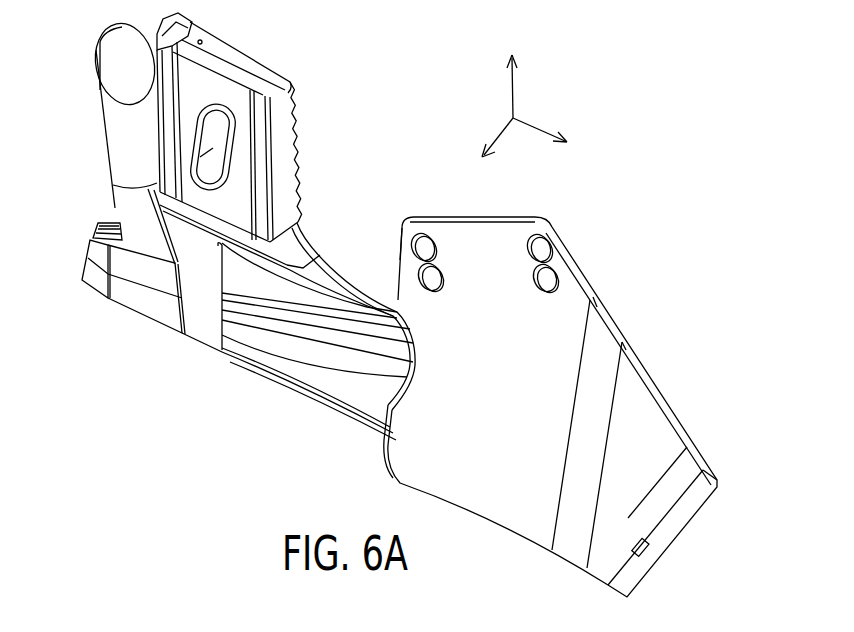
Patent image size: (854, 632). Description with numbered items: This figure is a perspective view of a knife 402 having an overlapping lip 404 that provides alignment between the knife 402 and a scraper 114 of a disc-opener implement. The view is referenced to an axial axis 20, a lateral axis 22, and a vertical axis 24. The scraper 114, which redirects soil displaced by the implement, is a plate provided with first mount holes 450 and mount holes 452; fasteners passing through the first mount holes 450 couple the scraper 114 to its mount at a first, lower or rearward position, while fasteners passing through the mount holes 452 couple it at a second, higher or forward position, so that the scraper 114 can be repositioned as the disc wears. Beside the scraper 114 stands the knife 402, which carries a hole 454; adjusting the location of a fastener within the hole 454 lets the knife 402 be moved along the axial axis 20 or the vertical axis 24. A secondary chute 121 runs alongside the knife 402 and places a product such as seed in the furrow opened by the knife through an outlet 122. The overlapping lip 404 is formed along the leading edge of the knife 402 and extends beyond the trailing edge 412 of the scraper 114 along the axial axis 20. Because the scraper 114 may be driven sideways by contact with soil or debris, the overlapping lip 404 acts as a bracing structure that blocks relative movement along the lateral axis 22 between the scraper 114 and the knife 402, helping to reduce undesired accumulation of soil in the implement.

The axial axis 20 is at (542, 125).
The lateral axis 22 is at (505, 135).
The vertical axis 24 is at (512, 92).
The scraper 114 is at (510, 497).
The secondary chute 121 is at (112, 130).
The outlet 122 is at (145, 298).
The knife 402 is at (365, 307).
The overlapping lip 404 is at (397, 373).
The trailing edge 412 is at (402, 242).
The first mount holes 450 is at (428, 245).
The mount holes 452 is at (543, 283).
The hole 454 is at (218, 127).